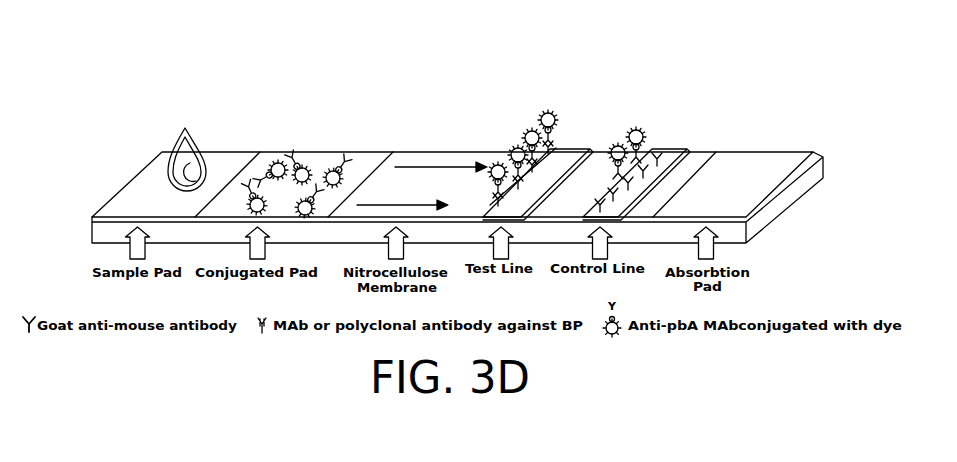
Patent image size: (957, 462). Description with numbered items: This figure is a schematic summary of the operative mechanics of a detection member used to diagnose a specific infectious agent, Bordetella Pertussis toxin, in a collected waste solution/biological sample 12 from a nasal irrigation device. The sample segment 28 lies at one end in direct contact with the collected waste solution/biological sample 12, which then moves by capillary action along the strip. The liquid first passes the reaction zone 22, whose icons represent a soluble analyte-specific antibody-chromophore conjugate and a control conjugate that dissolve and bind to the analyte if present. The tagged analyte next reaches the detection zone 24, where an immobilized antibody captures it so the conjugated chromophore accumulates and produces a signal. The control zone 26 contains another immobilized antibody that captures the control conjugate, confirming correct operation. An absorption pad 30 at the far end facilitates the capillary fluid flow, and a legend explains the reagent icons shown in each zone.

The collected waste solution/biological sample 12 is at (183, 163).
The reaction zone (R) 22 is at (362, 142).
The detection zone (D) 24 is at (586, 149).
The control zone (C) 26 is at (678, 150).
The sample segment, pad or section 28 is at (227, 154).
The absorption pad 30 is at (763, 150).